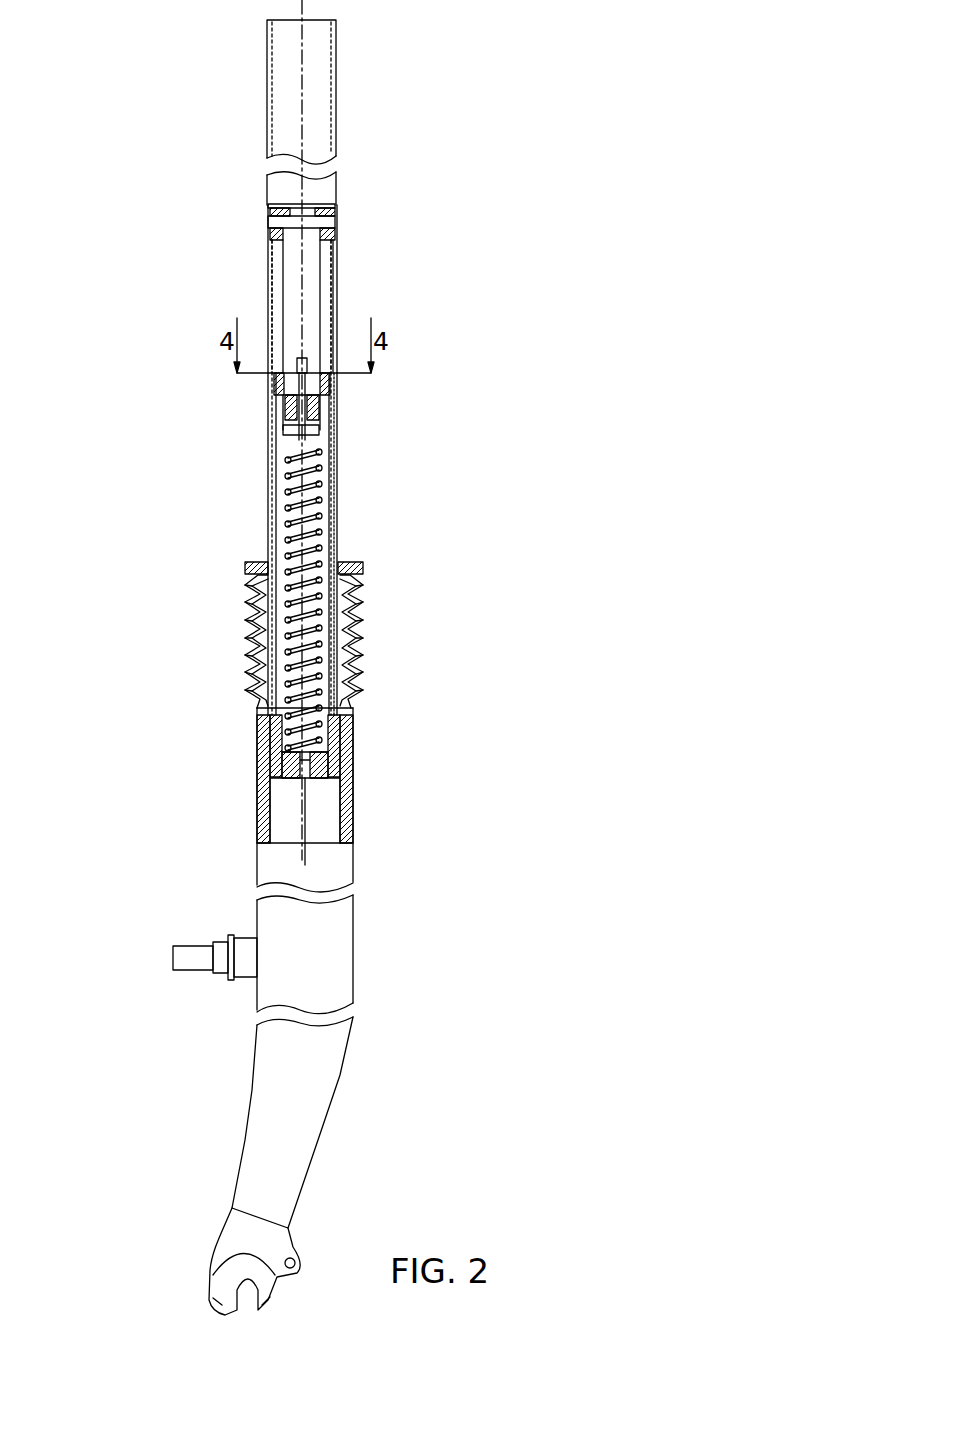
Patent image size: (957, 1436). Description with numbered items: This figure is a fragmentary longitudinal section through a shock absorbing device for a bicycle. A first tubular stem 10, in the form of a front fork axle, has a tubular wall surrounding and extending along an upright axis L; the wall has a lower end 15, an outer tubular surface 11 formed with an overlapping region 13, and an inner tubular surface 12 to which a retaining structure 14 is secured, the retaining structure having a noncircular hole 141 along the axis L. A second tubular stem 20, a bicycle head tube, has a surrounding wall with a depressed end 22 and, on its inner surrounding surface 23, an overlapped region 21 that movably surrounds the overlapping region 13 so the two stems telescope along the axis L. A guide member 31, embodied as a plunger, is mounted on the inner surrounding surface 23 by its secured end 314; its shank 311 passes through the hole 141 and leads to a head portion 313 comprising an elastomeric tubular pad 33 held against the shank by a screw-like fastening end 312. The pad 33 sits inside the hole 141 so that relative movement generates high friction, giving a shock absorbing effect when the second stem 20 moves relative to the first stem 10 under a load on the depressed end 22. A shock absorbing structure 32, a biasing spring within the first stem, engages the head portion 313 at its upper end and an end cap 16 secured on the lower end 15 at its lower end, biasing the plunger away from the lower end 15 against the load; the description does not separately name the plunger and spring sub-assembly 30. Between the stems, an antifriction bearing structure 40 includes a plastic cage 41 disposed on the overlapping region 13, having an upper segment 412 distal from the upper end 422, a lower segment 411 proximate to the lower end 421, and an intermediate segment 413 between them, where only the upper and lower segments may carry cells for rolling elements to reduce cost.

The depressed end 22 is at (336, 30).
The second tubular stem 20 is at (340, 183).
The secured end 314 is at (270, 206).
The overlapped region 21 is at (268, 545).
The inner surrounding surface 23 is at (333, 275).
The guide member 31 is at (285, 256).
The retaining structure 14 is at (322, 362).
The upper segment 412 is at (335, 370).
The noncircular hole 141 is at (272, 373).
The upper end 422 is at (268, 376).
The shank 311 is at (275, 385).
The overlapping region 13 is at (340, 385).
The tubular pad 33 is at (320, 405).
The head portion 313 is at (278, 428).
The fastening end 312 is at (285, 437).
The inner tubular surface 12 is at (338, 446).
The intermediate segment 413 is at (338, 485).
The rod assembly 30 is at (283, 512).
The shock absorbing structure 32 is at (320, 520).
The antifriction bearing structure 40 is at (298, 581).
The plastic cage 41 is at (258, 575).
The lower segment 411 is at (360, 635).
The lower end 421 is at (258, 630).
The outer tubular surface 11 is at (355, 683).
The first tubular stem 10 is at (338, 738).
The lower end 15 is at (330, 768).
The end cap 16 is at (340, 805).
The axis L is at (355, 836).